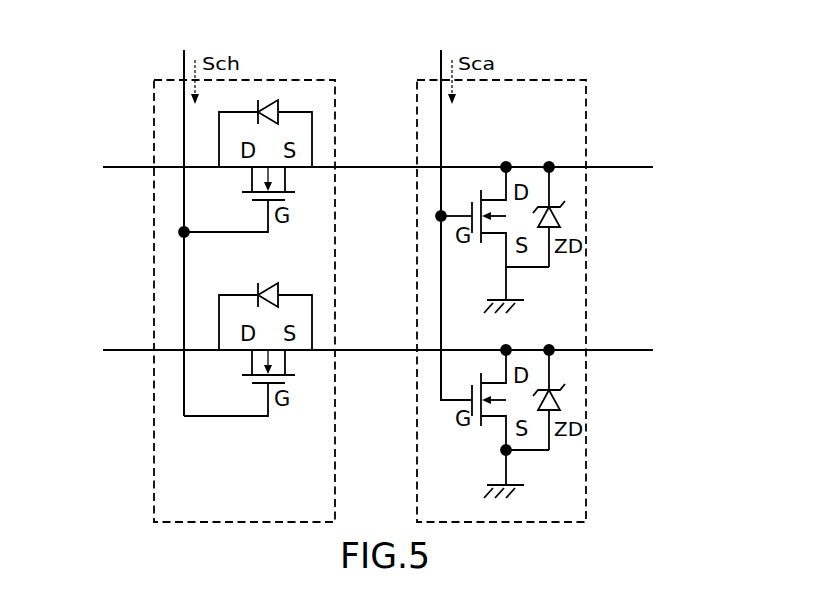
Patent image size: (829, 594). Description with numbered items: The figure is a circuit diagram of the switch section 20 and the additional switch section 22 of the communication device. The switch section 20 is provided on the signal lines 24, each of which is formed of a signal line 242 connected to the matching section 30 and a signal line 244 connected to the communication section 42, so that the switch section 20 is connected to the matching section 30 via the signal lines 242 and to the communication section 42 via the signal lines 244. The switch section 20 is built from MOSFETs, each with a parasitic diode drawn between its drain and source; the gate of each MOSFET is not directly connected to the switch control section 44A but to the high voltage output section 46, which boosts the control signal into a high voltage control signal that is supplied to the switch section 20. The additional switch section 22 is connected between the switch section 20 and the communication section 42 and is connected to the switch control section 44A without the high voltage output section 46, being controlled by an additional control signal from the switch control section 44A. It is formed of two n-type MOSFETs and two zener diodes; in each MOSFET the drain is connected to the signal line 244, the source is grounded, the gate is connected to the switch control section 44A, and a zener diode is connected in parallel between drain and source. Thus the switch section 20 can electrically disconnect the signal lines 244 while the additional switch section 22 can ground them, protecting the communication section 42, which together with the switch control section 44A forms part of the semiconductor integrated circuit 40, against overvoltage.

The switch section 20 is at (270, 80).
The additional switch section 22 is at (538, 80).
The signal lines 24 is at (371, 259).
The matching section 30 is at (246, 258).
The semiconductor integrated circuit 40 is at (424, 222).
The communication section 42 is at (551, 261).
The switch control section 44A is at (442, 214).
The high voltage output section 46 is at (192, 222).
The signal line 242 is at (118, 170).
The signal line 244 is at (366, 170).